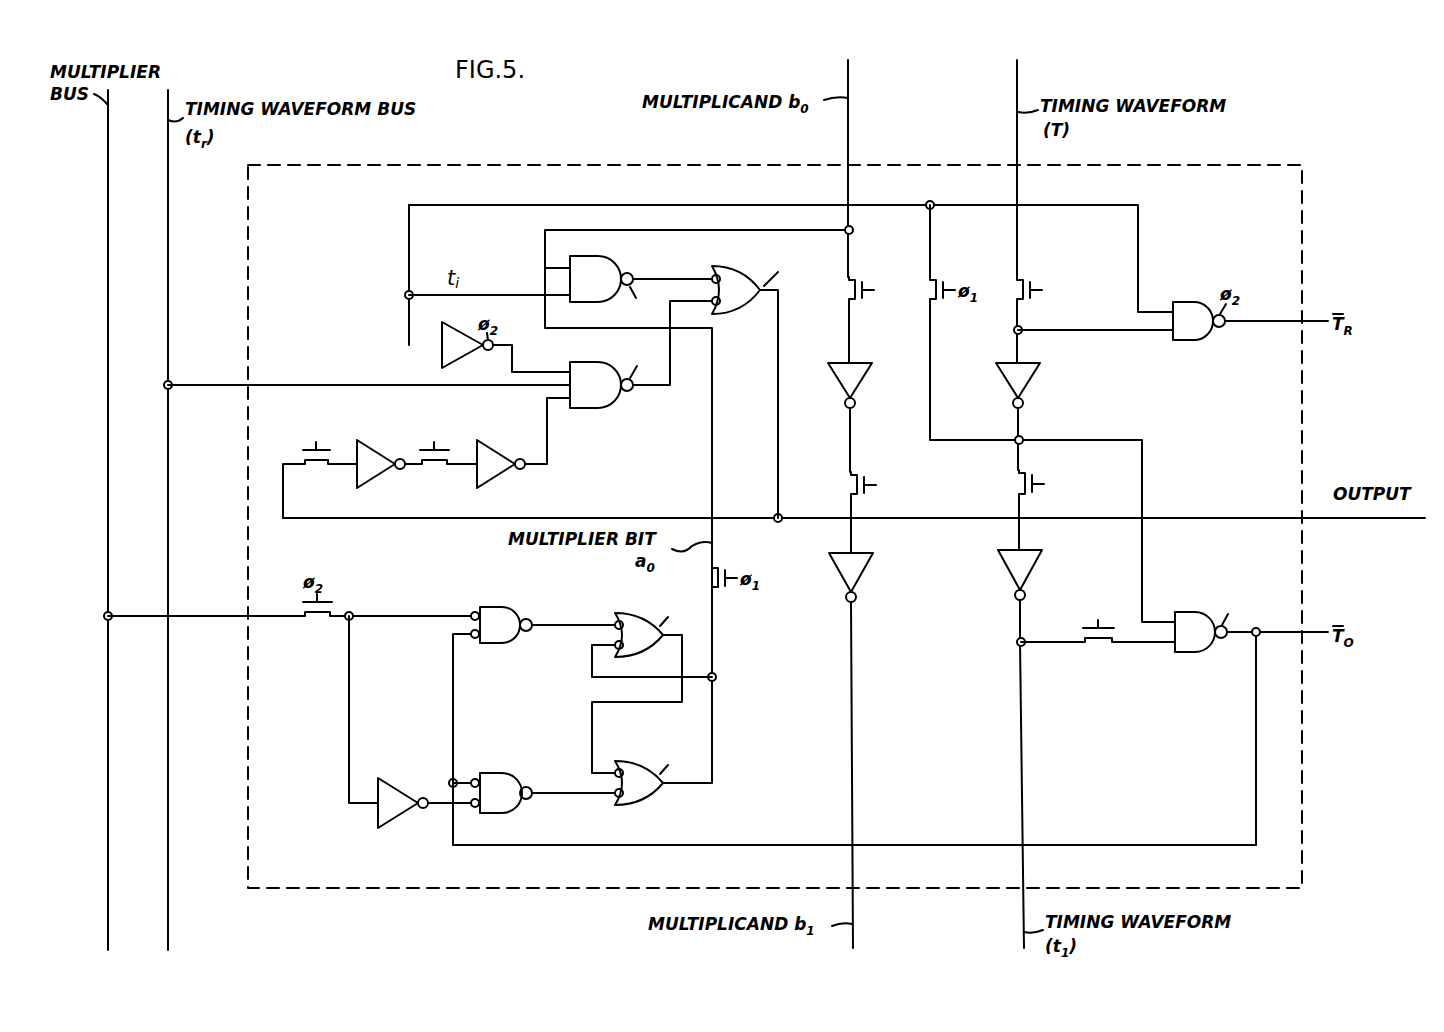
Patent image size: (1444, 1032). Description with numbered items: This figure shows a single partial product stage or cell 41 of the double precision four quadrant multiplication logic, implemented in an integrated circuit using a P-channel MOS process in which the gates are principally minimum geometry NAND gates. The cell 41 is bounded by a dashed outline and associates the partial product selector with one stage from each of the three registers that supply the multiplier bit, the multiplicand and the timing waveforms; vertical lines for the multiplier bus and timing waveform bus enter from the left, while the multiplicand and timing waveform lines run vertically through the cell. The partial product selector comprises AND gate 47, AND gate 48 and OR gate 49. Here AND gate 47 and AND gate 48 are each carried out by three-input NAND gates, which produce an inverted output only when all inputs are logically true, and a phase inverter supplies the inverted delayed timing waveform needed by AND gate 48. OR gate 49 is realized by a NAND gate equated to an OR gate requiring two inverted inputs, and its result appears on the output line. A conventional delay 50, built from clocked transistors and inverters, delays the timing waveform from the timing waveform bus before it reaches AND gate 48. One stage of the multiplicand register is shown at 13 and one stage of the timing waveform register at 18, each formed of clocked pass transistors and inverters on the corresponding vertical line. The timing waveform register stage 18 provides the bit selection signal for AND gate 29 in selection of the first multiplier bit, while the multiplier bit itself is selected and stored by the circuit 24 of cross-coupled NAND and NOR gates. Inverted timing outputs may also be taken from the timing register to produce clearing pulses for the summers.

The multiplicand register stage 13 is at (838, 452).
The timing waveform register stage 18 is at (1118, 413).
The multiplier bit selection and storage circuit 24 is at (525, 721).
The AND gate 29 is at (1193, 655).
The partial product stage (cell) 41 is at (1283, 162).
The AND gate 47 is at (617, 271).
The AND gate 48 is at (613, 405).
The OR gate 49 is at (748, 270).
The delay 50 is at (443, 496).